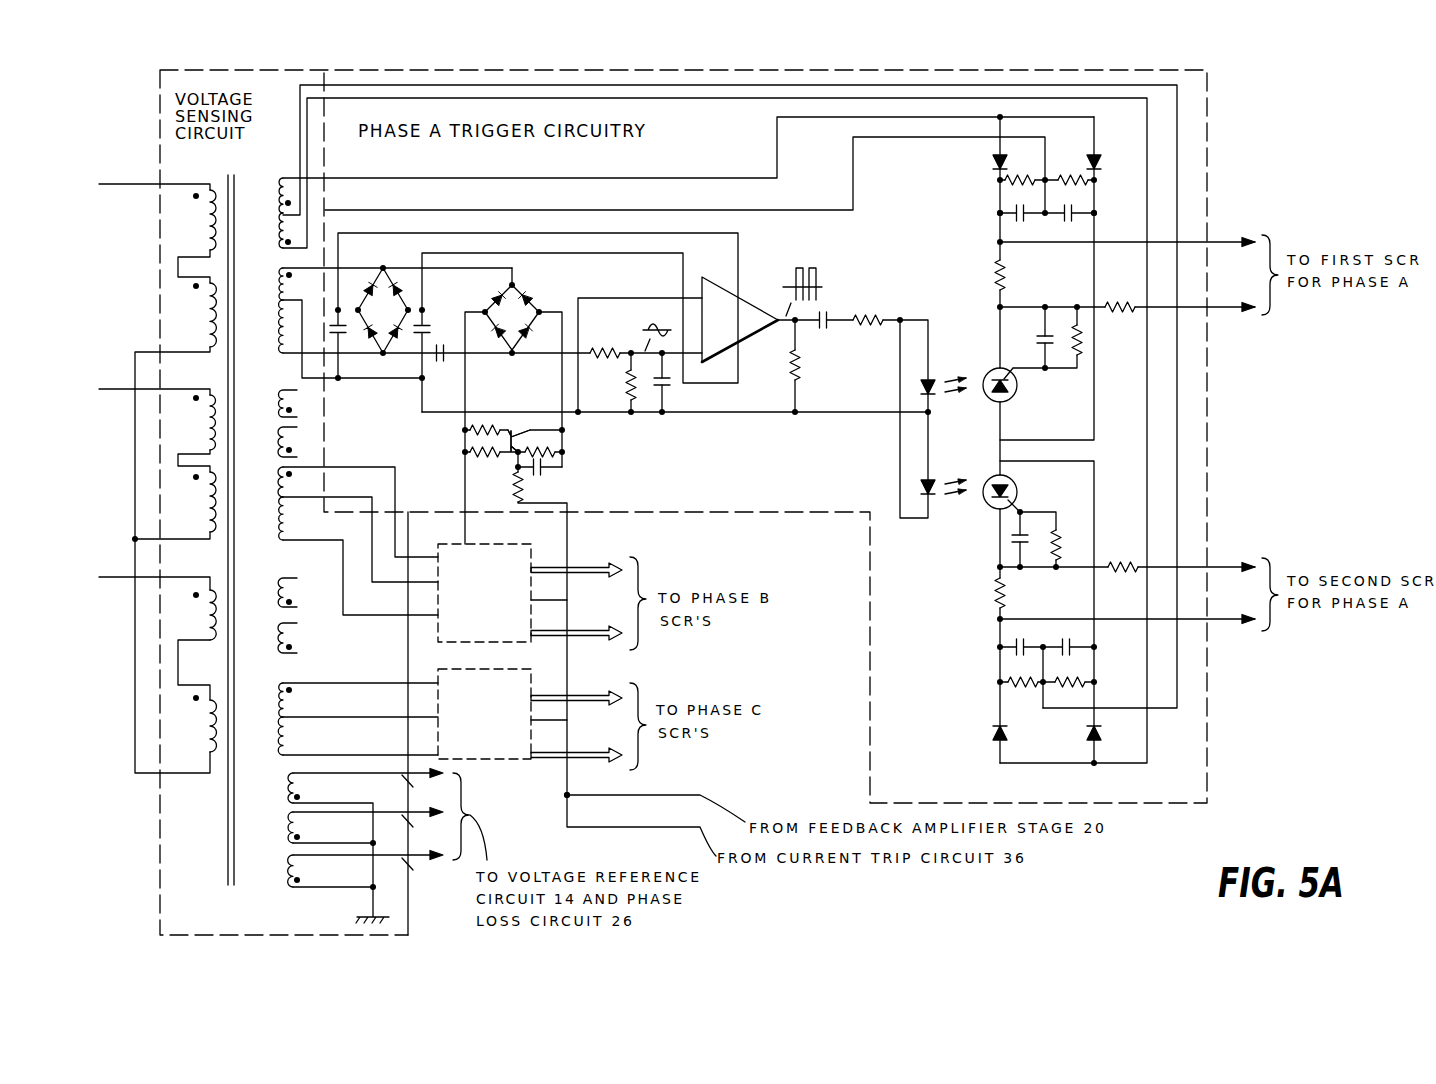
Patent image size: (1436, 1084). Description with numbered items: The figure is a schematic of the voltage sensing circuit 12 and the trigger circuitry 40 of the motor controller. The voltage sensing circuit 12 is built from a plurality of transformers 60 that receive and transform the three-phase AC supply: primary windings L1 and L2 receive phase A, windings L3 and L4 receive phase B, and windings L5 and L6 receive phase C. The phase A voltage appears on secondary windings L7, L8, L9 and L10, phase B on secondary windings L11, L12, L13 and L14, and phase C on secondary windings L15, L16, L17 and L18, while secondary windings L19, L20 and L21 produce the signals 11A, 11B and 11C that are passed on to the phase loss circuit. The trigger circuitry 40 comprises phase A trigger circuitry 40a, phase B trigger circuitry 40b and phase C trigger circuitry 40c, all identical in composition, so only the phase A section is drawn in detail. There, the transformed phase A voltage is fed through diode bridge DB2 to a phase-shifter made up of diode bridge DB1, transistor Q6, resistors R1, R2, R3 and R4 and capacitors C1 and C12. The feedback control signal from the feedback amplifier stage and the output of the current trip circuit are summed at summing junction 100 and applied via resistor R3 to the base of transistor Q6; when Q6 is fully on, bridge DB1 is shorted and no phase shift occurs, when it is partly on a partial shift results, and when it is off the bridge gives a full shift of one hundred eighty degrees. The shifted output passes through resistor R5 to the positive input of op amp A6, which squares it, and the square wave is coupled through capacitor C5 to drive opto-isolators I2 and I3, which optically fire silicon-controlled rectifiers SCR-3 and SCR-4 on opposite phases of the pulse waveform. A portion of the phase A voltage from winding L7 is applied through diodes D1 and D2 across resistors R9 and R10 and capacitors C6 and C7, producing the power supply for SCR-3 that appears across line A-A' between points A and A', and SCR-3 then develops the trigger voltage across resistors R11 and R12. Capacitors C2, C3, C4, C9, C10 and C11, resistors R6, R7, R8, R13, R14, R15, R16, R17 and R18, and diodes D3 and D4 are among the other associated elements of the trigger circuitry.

The voltage sensing circuit 12 is at (162, 236).
The transformers 60 is at (213, 866).
The primary winding L1 is at (195, 220).
The primary winding L2 is at (195, 315).
The primary winding L3 is at (193, 422).
The primary winding L4 is at (195, 502).
The primary winding L5 is at (191, 615).
The primary winding L6 is at (192, 723).
The secondary winding L7 is at (263, 195).
The secondary winding L8 is at (263, 230).
The secondary winding L9 is at (261, 287).
The secondary winding L10 is at (260, 326).
The secondary winding L11 is at (267, 403).
The secondary winding L12 is at (267, 442).
The secondary winding L13 is at (260, 482).
The secondary winding L14 is at (260, 518).
The secondary winding L15 is at (267, 593).
The secondary winding L16 is at (267, 640).
The secondary winding L17 is at (260, 700).
The secondary winding L18 is at (260, 736).
The secondary winding L19 is at (268, 788).
The secondary winding L20 is at (268, 827).
The secondary winding L21 is at (268, 871).
The diode bridge DB1 is at (521, 292).
The diode bridge DB2 is at (378, 276).
The capacitor C1 is at (441, 362).
The capacitor C2 is at (343, 343).
The capacitor C3 is at (425, 320).
The capacitor C4 is at (670, 390).
The capacitor C5 is at (820, 313).
The capacitor C6 is at (1016, 220).
The capacitor C7 is at (1075, 223).
The capacitor C9 is at (1026, 535).
The capacitor C10 is at (1021, 640).
The capacitor C11 is at (1075, 642).
The capacitor C12 is at (551, 470).
The resistor R1 is at (490, 427).
The resistor R2 is at (489, 457).
The resistor R3 is at (512, 488).
The resistor R4 is at (553, 450).
The resistor R5 is at (597, 348).
The resistor R6 is at (629, 373).
The resistor R7 is at (803, 368).
The resistor R8 is at (878, 313).
The resistor R9 is at (1022, 175).
The resistor R10 is at (1065, 175).
The resistor R11 is at (1010, 270).
The resistor R12 is at (1121, 303).
The resistor R13 is at (1082, 339).
The resistor R14 is at (1062, 528).
The resistor R15 is at (1022, 690).
The resistor R16 is at (1082, 677).
The resistor R17 is at (1118, 563).
The resistor R18 is at (994, 599).
The transistor Q6 is at (513, 431).
The op amp A6 is at (740, 319).
The opto-isolator I2 is at (933, 383).
The opto-isolator I3 is at (933, 484).
The silicon-controlled rectifier SCR-3 is at (1014, 395).
The silicon-controlled rectifier SCR-4 is at (1015, 488).
The diode D1 is at (994, 161).
The diode D2 is at (1098, 157).
The diode D3 is at (994, 737).
The diode D4 is at (1087, 737).
The line A-A' A is at (983, 211).
The line A- A' is at (1106, 206).
The trigger circuitry 40 is at (667, 576).
The phase A trigger circuitry 40a is at (1210, 125).
The phase B trigger circuitry 40b is at (488, 547).
The phase C trigger circuitry 40c is at (486, 764).
The summing junction 100 is at (572, 793).
The phase A signal 11A is at (424, 789).
The phase B signal 11B is at (424, 830).
The phase C signal 11C is at (425, 872).